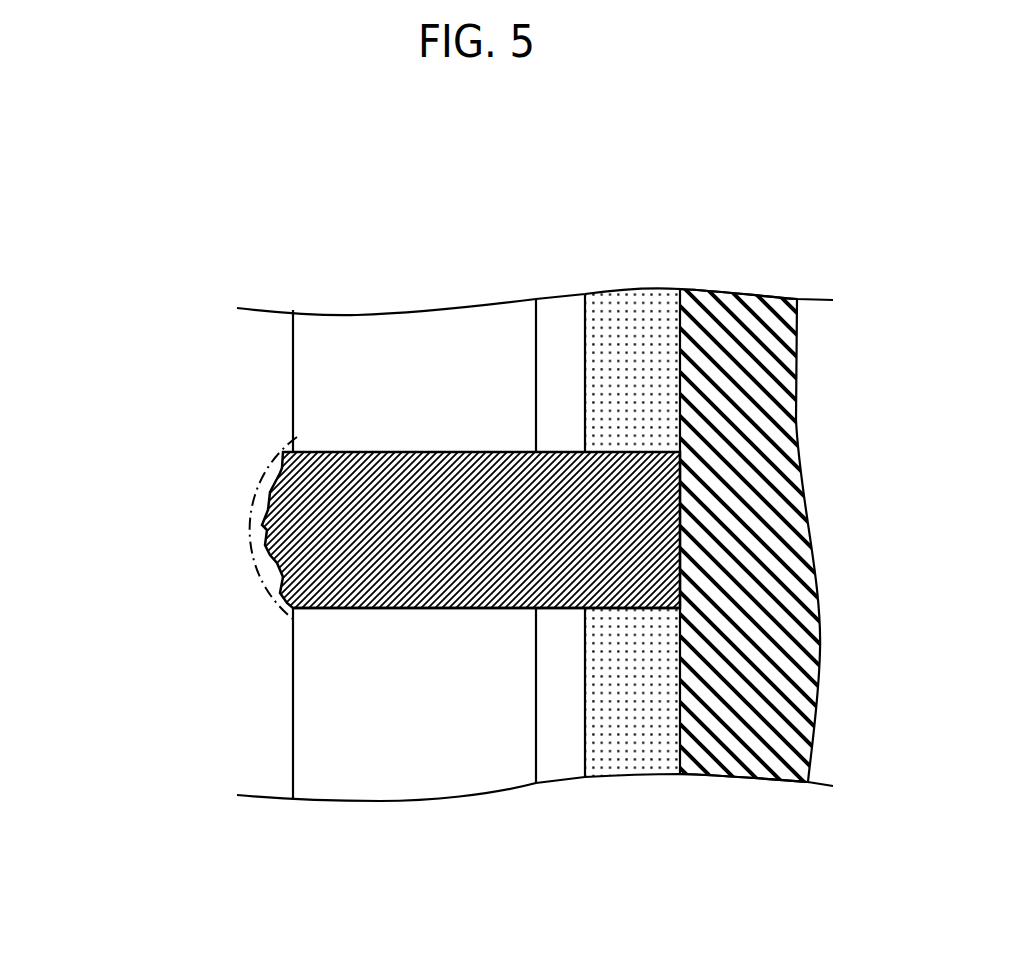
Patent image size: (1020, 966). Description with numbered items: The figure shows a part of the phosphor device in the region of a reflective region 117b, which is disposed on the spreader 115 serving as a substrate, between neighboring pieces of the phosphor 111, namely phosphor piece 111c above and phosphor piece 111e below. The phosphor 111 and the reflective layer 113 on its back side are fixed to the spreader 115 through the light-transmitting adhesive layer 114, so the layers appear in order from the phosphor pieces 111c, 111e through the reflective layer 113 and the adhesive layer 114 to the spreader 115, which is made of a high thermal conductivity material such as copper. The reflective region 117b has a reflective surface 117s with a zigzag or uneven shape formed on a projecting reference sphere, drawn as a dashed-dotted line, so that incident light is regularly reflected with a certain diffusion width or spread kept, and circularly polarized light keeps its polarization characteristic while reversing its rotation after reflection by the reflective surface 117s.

The phosphor 111 is at (535, 544).
The phosphor piece 111c is at (312, 383).
The phosphor piece 111e is at (312, 717).
The reflective layer 113 is at (560, 312).
The light-transmitting adhesive layer 114 is at (632, 312).
The spreader 115 is at (745, 310).
The reflective surface 117s is at (268, 556).
The reflective region 117b is at (298, 580).